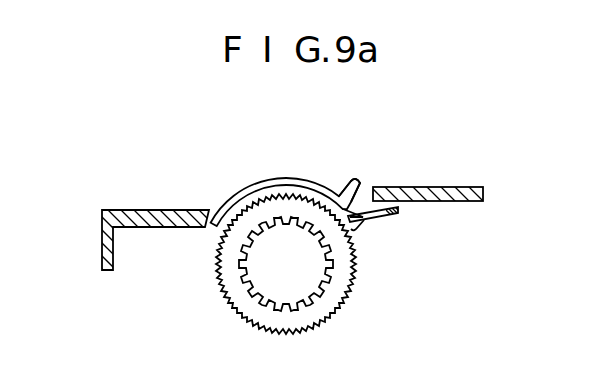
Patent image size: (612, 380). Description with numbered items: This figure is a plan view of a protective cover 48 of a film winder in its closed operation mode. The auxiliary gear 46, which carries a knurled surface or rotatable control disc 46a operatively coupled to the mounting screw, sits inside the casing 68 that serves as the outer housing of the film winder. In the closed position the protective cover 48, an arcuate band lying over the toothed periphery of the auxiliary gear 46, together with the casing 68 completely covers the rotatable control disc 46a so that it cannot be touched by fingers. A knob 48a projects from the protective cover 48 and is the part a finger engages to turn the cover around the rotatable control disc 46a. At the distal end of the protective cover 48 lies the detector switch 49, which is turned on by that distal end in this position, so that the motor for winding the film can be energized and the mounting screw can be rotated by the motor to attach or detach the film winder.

The auxiliary gear 46 is at (243, 283).
The rotatable control disc 46a is at (347, 292).
The protective cover 48 is at (288, 181).
The knob 48a is at (355, 181).
The detector switch 49 is at (381, 231).
The casing 68 is at (161, 218).